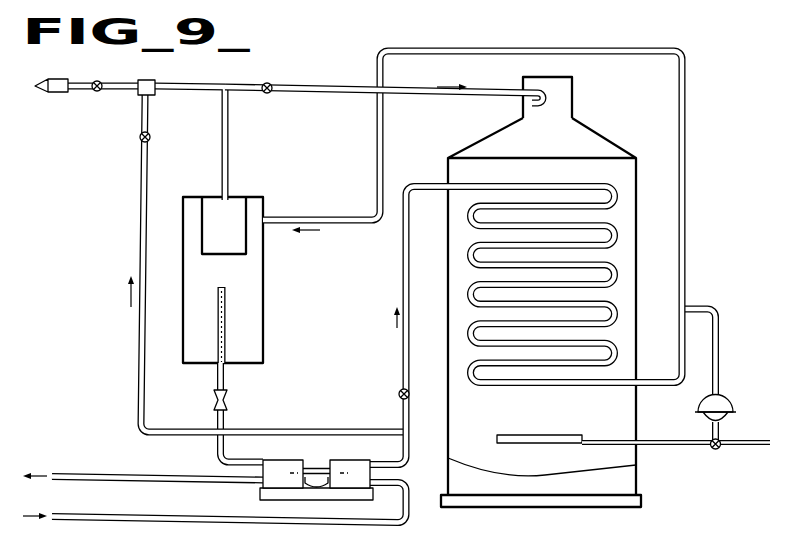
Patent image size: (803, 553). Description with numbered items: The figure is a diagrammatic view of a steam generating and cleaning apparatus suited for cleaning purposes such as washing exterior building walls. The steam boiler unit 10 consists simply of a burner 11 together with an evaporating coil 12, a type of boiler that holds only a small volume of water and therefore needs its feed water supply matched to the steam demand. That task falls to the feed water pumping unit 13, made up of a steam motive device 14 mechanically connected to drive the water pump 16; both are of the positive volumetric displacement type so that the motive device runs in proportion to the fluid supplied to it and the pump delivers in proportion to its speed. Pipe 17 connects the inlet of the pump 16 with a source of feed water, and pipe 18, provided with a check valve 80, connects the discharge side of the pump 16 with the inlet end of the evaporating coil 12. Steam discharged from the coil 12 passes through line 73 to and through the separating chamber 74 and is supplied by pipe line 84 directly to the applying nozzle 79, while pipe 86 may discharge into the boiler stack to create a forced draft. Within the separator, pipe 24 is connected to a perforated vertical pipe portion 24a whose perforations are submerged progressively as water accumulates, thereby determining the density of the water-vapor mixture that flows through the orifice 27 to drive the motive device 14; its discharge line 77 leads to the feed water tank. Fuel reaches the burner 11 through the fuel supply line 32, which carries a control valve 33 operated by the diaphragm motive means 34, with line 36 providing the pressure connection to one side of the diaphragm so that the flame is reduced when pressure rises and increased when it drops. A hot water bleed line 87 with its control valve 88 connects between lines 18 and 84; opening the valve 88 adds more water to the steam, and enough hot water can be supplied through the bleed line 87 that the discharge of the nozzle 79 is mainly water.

The steam boiler unit 10 is at (473, 147).
The burner 11 is at (577, 432).
The evaporating coil 12 is at (489, 386).
The feed water pumping unit 13 is at (324, 456).
The steam motive device 14 is at (290, 461).
The water pump 16 is at (344, 464).
The pipe 17 is at (178, 526).
The pipe 18 is at (402, 279).
The pipe 24 is at (226, 382).
The perforated vertical pipe portion 24a is at (224, 322).
The orifice 27 is at (228, 402).
The fuel supply line 32 is at (658, 447).
The control valve 33 is at (718, 450).
The diaphragm motive means 34 is at (724, 399).
The line 36 is at (720, 357).
The line 73 is at (342, 221).
The separator chamber 74 is at (265, 277).
The discharge line 77 is at (100, 471).
The applying nozzle 79 is at (50, 96).
The check valve 80 is at (399, 395).
The pipe line 84 is at (185, 96).
The pipe 86 is at (311, 98).
The hot water bleed line 87 is at (136, 358).
The control valve 88 is at (140, 140).